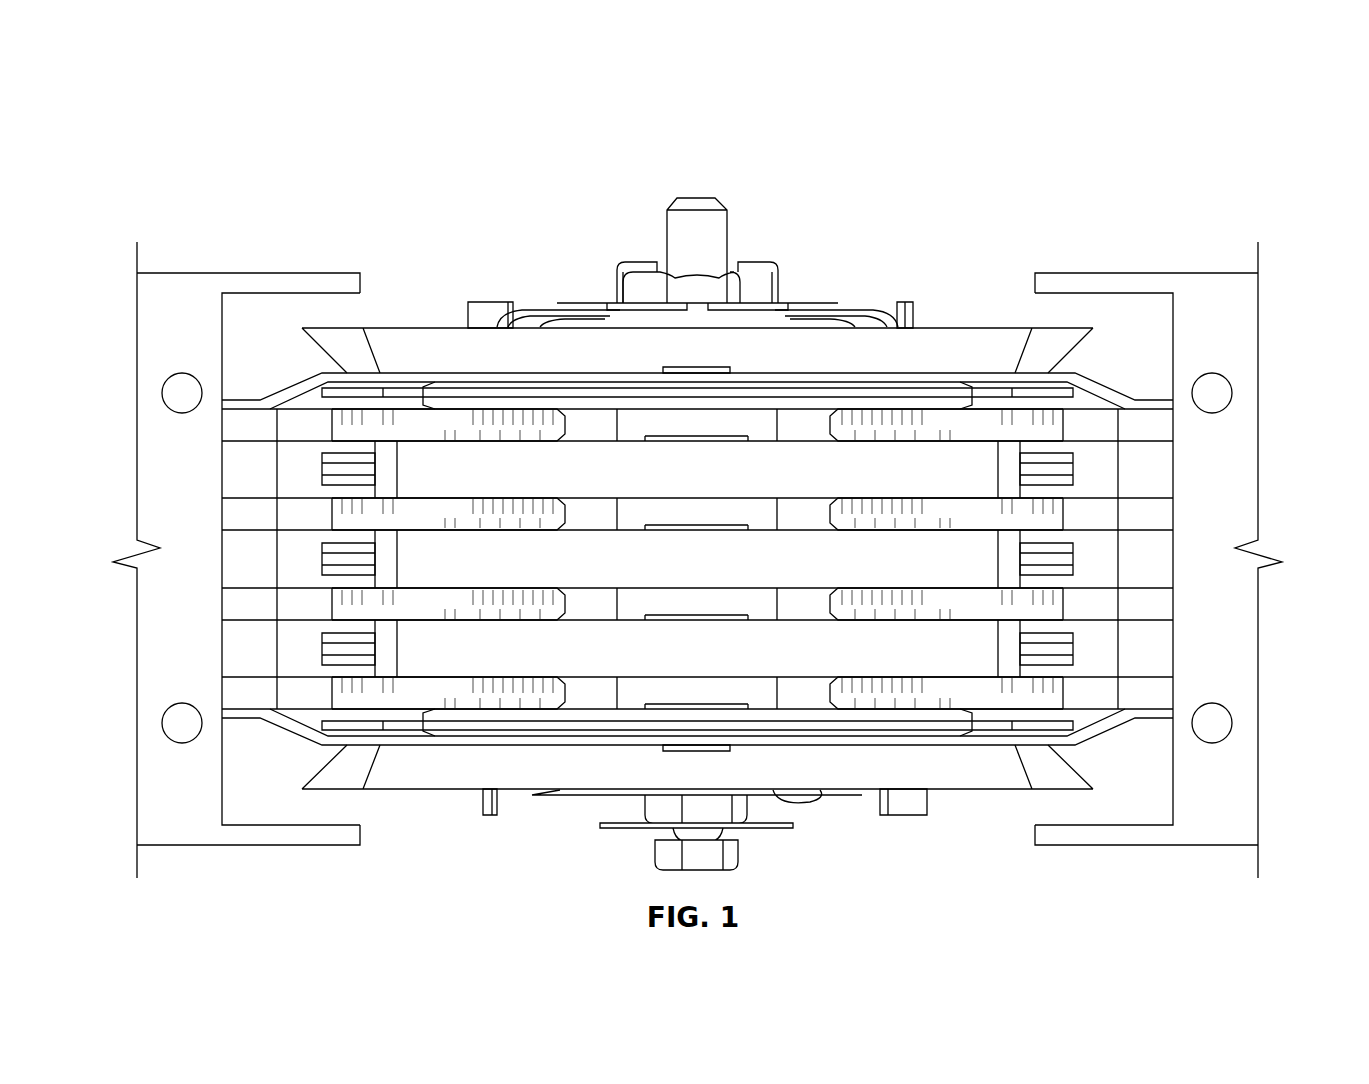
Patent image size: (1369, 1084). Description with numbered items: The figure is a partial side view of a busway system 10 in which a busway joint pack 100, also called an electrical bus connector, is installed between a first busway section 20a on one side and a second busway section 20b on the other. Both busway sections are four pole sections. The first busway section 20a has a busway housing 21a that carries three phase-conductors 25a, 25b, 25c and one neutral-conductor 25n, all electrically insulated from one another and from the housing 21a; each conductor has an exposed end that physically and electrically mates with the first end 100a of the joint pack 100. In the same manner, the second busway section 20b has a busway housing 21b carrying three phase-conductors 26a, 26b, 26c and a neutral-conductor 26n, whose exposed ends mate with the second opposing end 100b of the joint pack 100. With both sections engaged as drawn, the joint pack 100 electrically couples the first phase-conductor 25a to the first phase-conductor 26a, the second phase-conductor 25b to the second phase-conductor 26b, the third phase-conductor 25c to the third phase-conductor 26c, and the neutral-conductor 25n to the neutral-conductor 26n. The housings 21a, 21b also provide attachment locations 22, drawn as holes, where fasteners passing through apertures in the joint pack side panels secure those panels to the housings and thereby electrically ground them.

The busway system 10 is at (1173, 152).
The first busway section 20a is at (192, 250).
The second busway section 20b is at (1206, 250).
The busway housing 21a is at (195, 832).
The busway housing 21b is at (1205, 832).
The attachment locations 22 is at (170, 390).
The first phase-conductor 25a is at (425, 428).
The second phase-conductor 25b is at (437, 510).
The third phase-conductor 25c is at (437, 607).
The neutral-conductor 25n is at (422, 690).
The first phase-conductor 26a is at (970, 428).
The second phase-conductor 26b is at (958, 510).
The third phase-conductor 26c is at (958, 607).
The neutral-conductor 26n is at (973, 690).
The busway joint pack 100 is at (525, 262).
The first end 100a is at (303, 302).
The second opposing end 100b is at (1087, 302).